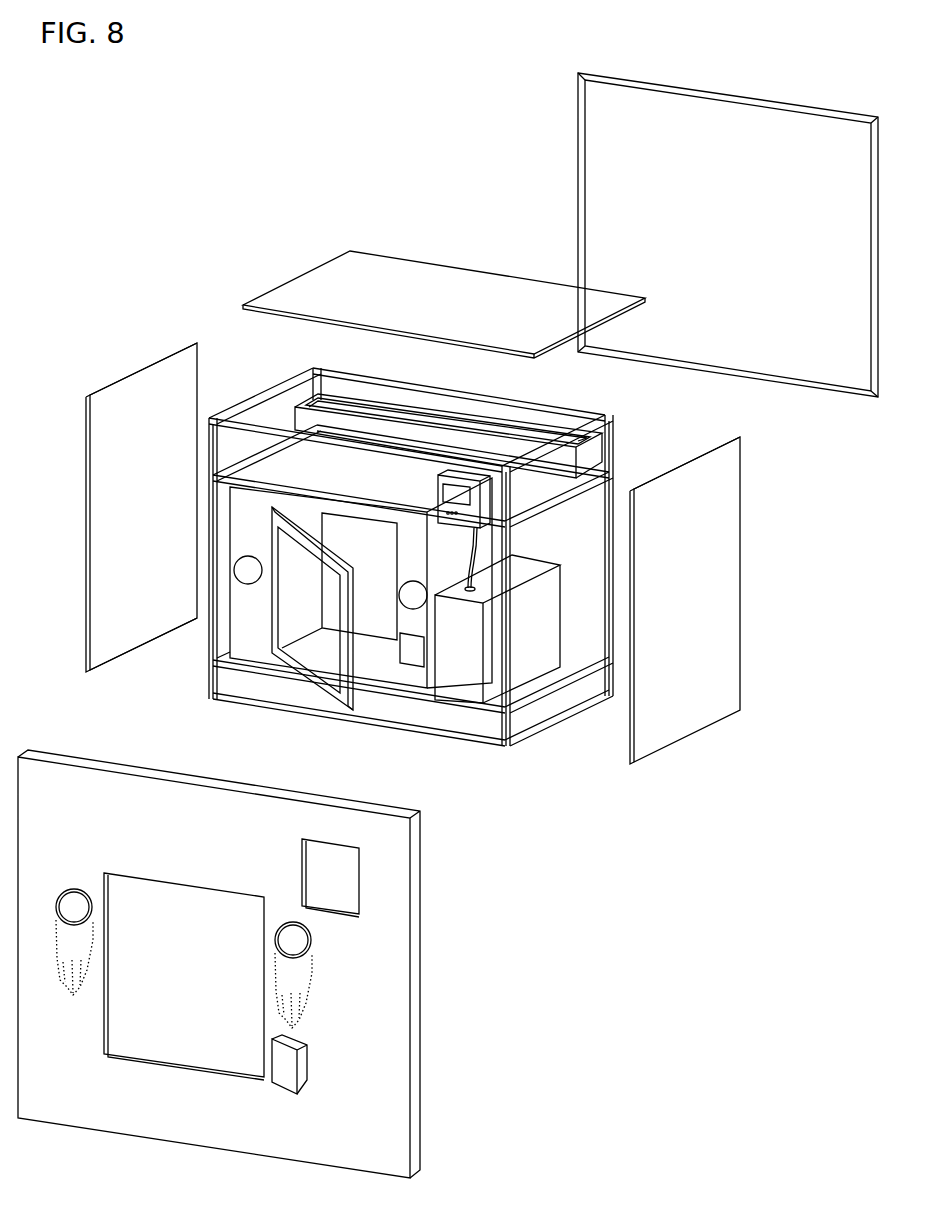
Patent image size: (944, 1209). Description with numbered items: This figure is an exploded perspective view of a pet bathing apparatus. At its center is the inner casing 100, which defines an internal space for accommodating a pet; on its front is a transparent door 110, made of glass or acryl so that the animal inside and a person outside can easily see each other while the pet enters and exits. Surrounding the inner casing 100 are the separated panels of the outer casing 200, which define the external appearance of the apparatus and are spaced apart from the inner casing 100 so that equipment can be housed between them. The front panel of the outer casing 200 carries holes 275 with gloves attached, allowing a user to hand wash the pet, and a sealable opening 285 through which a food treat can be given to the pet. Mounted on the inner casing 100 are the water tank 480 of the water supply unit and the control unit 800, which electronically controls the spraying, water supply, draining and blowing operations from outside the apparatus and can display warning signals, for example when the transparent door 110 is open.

The inner casing 100 is at (393, 680).
The transparent door 110 is at (317, 682).
The outer casing 200 is at (722, 200).
The holes 275 is at (73, 907).
The sealable opening 285 is at (297, 1065).
The water tank 480 is at (303, 415).
The control unit 800 is at (463, 518).